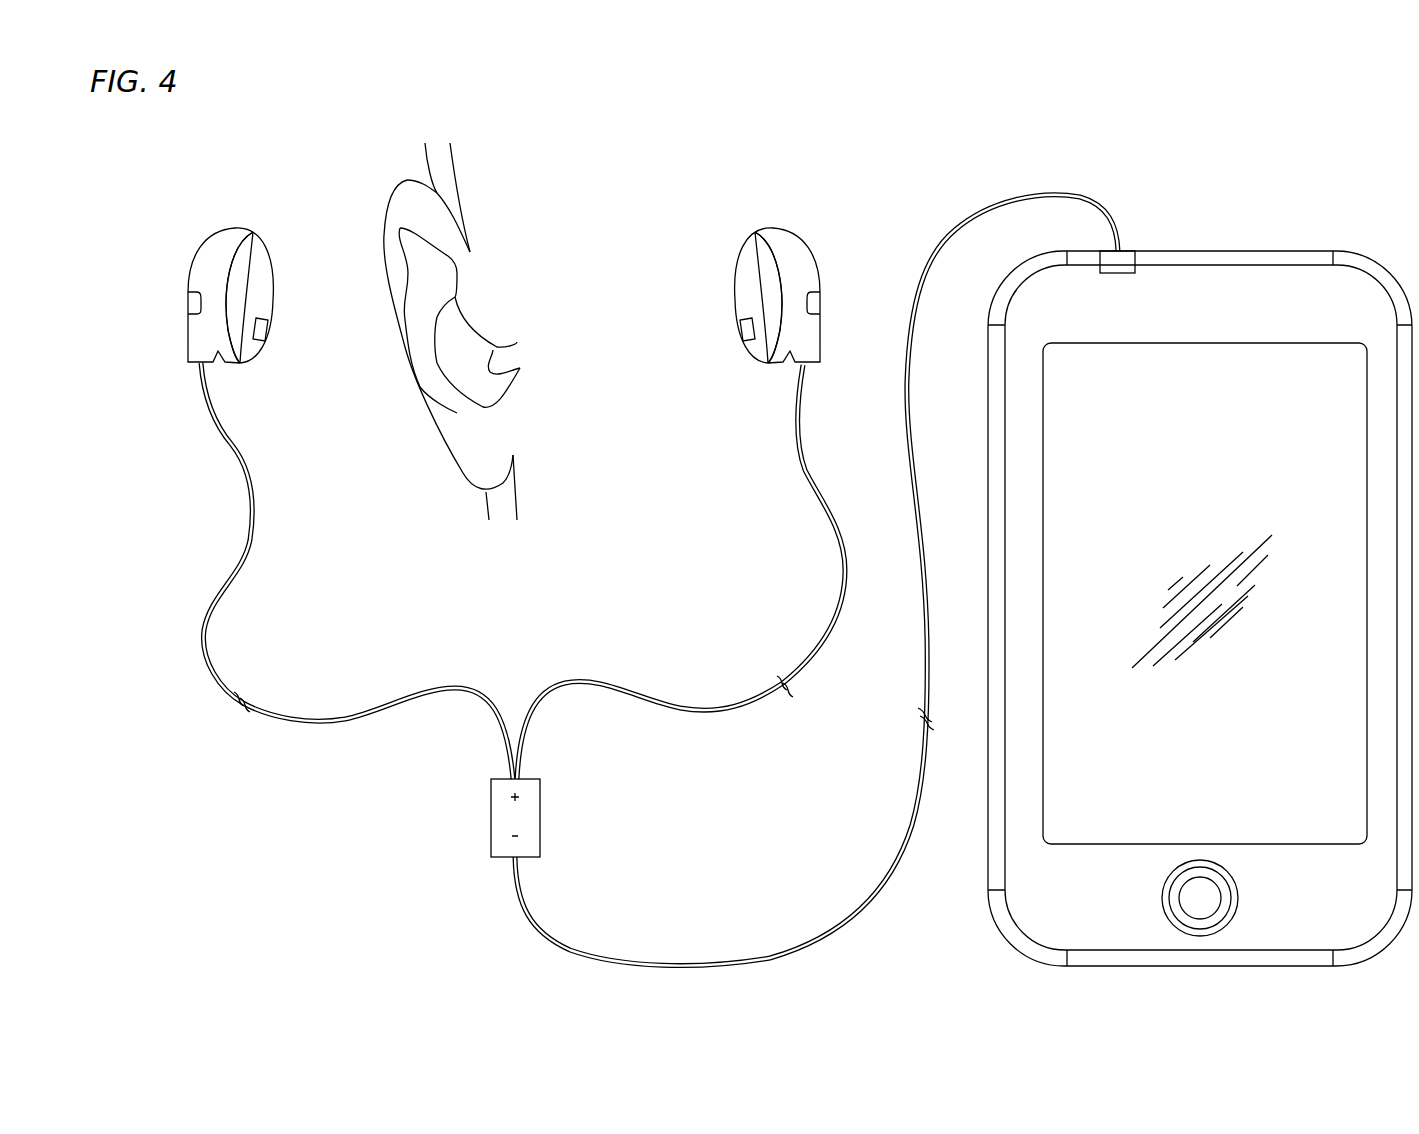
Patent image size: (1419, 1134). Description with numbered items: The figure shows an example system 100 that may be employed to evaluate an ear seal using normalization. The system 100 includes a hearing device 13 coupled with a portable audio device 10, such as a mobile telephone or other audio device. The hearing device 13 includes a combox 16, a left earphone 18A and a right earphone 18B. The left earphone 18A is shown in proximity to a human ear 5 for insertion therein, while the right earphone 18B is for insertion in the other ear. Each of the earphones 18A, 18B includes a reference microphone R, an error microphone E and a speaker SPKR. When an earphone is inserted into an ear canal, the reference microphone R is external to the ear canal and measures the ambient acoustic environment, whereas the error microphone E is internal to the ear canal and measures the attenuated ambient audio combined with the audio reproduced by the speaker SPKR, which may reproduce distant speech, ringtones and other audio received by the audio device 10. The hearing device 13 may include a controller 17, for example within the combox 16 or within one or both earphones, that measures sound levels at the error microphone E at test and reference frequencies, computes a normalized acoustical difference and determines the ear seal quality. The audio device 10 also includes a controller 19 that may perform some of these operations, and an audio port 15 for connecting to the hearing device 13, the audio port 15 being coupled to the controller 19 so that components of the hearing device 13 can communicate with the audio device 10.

The system 100 is at (856, 130).
The hearing device 13 is at (627, 210).
The portable audio device 10 is at (1212, 222).
The human ear 5 is at (406, 179).
The left earphone 18A is at (239, 229).
The right earphone 18B is at (822, 330).
The speaker SPKR is at (234, 254).
The reference microphone R is at (186, 300).
The error microphone E is at (270, 333).
The audio port 15 is at (1117, 274).
The combox 16 is at (540, 820).
The controller 17 is at (491, 804).
The controller 19 is at (1023, 958).